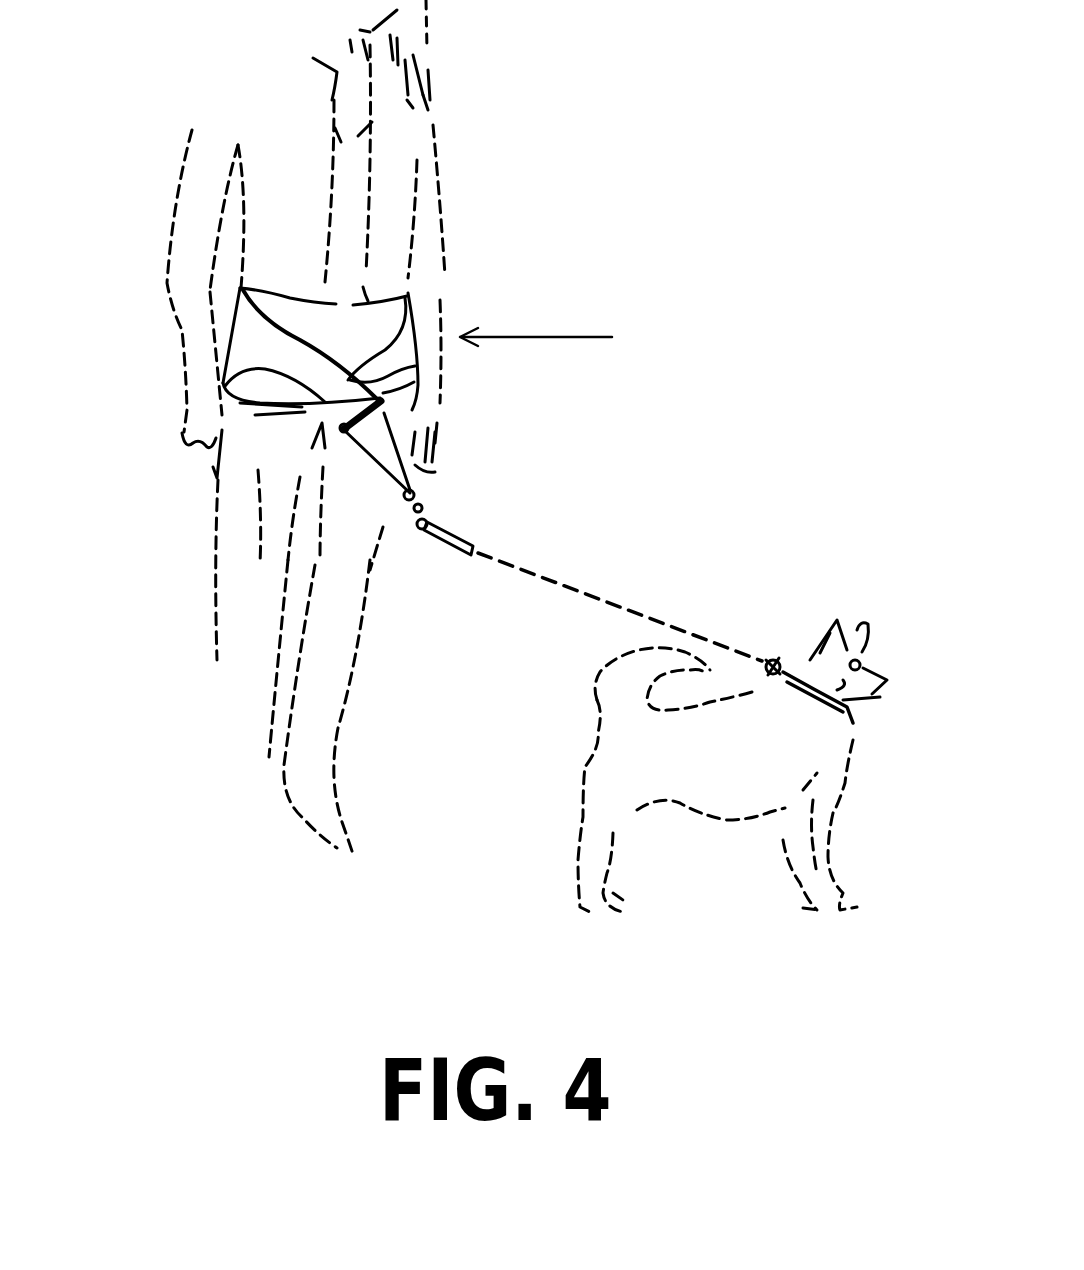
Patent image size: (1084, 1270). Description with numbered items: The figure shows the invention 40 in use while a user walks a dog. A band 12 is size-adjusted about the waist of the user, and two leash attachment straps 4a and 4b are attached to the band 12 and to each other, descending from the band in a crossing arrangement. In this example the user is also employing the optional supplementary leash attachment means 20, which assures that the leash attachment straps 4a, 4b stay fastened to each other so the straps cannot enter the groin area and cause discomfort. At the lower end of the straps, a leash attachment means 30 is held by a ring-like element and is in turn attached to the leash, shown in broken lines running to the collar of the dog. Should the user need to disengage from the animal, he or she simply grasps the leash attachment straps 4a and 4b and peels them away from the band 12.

The leash attachment strap 4a is at (252, 342).
The leash attachment strap 4b is at (410, 363).
The band 12 is at (405, 295).
The supplementary leash attachment means 20 is at (387, 406).
The leash attachment means 30 is at (430, 515).
The invention 40 is at (611, 485).